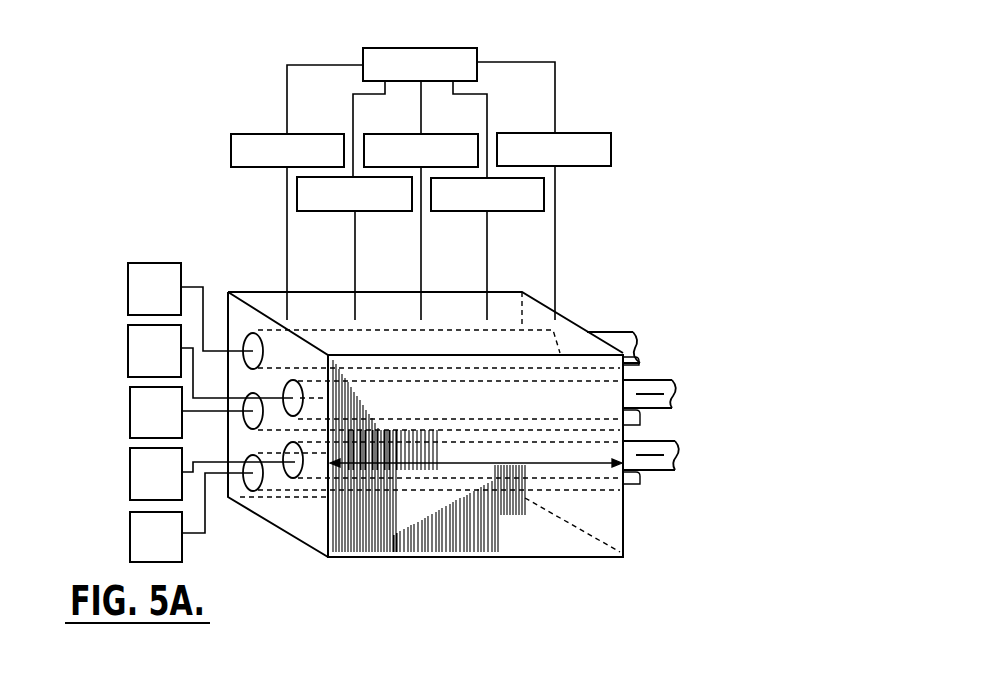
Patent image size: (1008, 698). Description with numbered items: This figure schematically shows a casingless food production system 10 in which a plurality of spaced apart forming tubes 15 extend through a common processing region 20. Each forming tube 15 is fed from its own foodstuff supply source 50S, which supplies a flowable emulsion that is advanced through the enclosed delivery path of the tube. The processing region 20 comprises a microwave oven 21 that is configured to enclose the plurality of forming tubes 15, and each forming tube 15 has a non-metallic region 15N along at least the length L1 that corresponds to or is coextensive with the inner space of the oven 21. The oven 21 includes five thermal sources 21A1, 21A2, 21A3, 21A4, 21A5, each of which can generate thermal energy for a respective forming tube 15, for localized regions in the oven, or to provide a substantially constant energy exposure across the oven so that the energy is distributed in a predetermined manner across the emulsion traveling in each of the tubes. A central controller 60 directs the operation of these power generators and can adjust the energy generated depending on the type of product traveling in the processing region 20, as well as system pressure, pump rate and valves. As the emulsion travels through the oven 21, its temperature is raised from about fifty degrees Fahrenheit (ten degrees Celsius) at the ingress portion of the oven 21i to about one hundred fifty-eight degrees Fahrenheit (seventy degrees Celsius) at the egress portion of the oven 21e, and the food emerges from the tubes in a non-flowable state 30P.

The casingless food production system 10 is at (270, 49).
The central controller 60 is at (430, 48).
The thermal source 21A1 is at (578, 133).
The thermal source 21A2 is at (425, 133).
The thermal source 21A3 is at (258, 133).
The thermal source 21A4 is at (510, 211).
The thermal source 21A5 is at (337, 211).
The oven 21 is at (572, 322).
The processing region 20 is at (449, 388).
The forming tube 15 is at (318, 466).
The non-metallic region 15N is at (501, 482).
The length L1 is at (577, 463).
The non-flowable state 30P is at (641, 345).
The foodstuff supply source 50S is at (128, 286).
The ingress portion of the oven 21i is at (382, 646).
The egress portion of the oven 21e is at (652, 646).